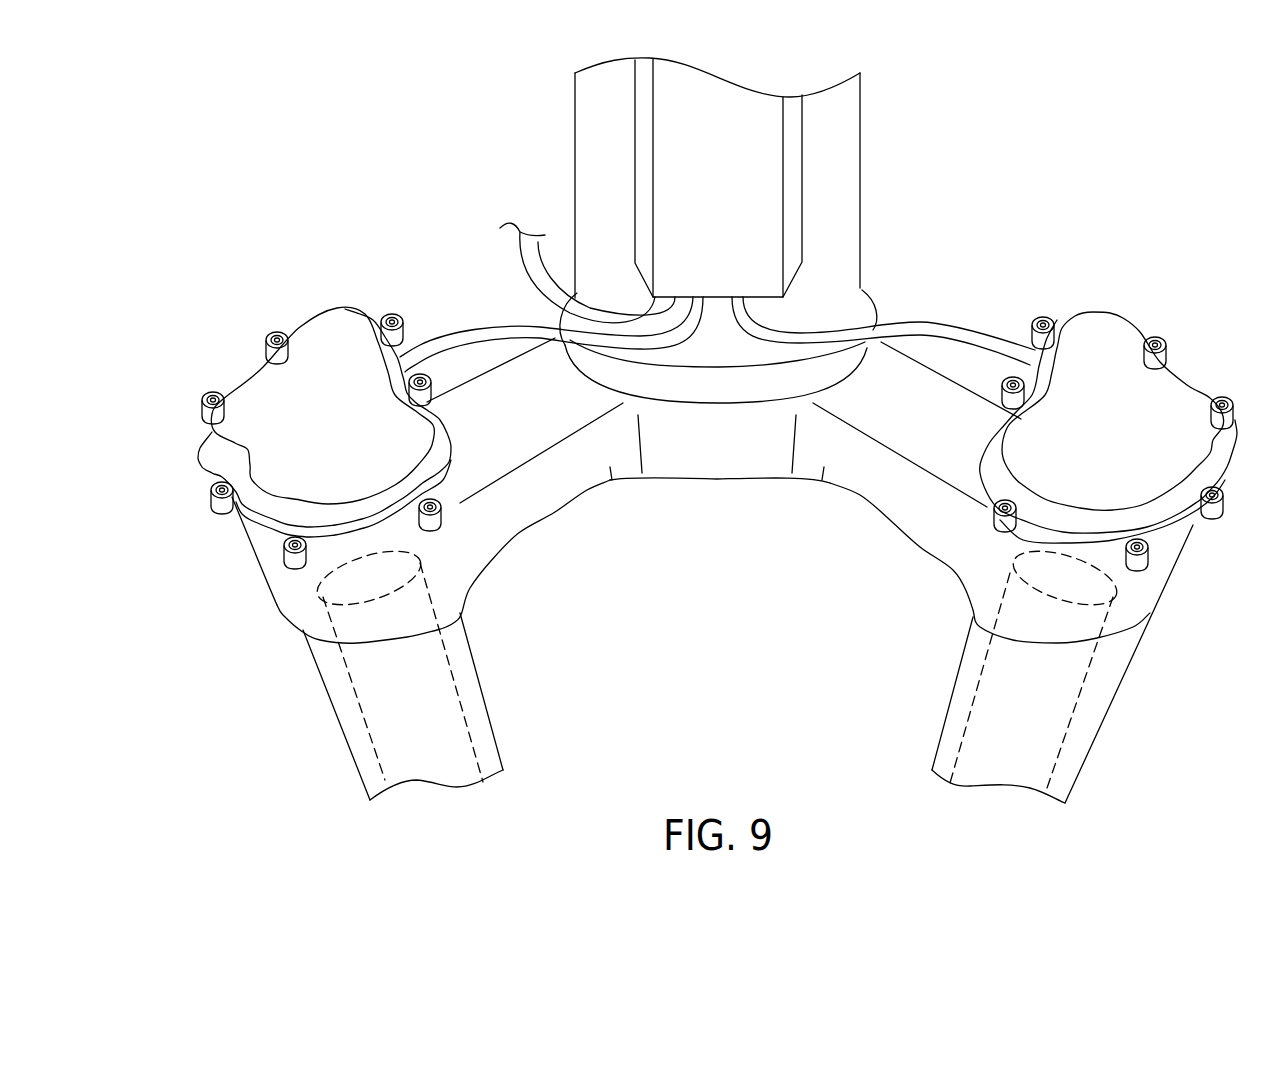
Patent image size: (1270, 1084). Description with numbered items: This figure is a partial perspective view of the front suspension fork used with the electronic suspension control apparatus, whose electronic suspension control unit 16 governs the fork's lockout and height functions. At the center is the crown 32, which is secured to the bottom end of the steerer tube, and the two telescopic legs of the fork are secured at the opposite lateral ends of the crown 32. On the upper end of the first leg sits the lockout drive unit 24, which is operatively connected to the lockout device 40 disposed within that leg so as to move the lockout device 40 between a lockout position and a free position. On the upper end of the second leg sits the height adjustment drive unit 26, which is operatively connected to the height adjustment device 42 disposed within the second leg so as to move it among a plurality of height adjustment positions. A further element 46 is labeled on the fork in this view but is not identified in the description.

The electronic suspension control unit 16 is at (806, 171).
The lockout drive unit 24 is at (247, 376).
The height adjustment drive unit 26 is at (1185, 378).
The crown 32 is at (945, 383).
The lockout device 40 is at (455, 676).
The height adjustment device 42 is at (341, 733).
The right fork leg 46 is at (1106, 704).